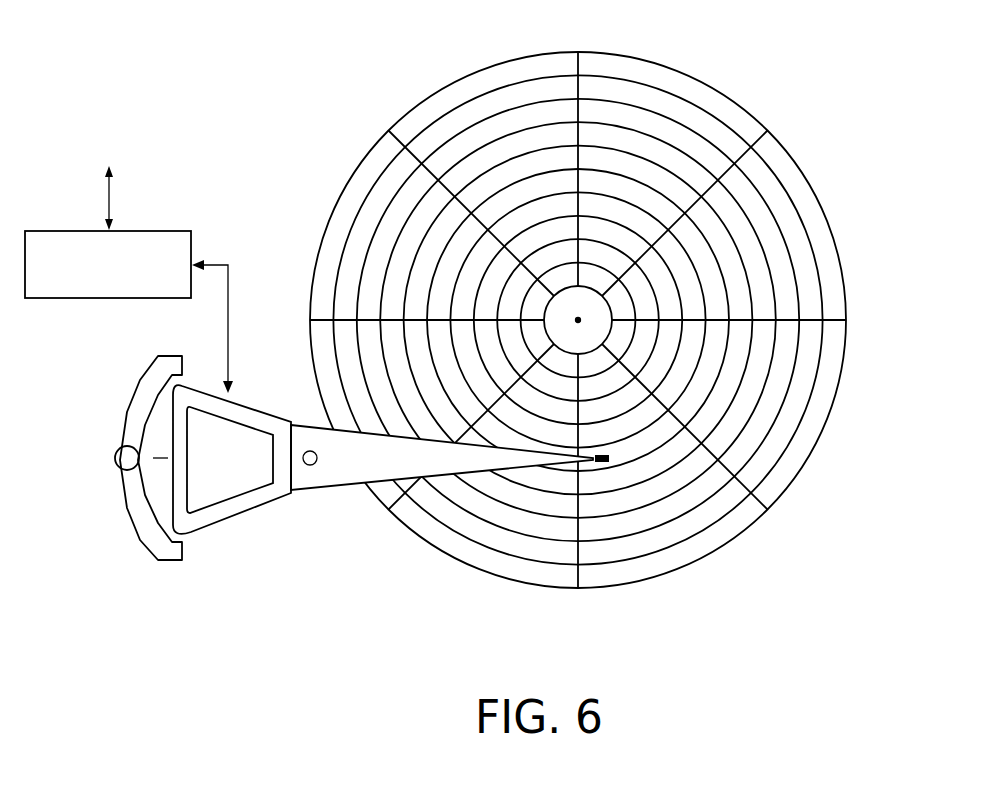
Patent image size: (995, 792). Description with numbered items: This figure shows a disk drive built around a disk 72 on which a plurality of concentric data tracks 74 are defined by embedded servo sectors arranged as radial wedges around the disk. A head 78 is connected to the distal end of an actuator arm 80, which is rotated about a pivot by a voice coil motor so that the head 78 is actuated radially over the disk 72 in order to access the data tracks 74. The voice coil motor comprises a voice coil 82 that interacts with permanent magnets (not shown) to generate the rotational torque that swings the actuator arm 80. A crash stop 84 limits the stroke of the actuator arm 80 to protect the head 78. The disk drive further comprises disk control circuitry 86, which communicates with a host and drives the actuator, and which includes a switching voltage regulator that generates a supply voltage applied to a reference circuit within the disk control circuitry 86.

The disk 72 is at (340, 116).
The data tracks 74 is at (765, 228).
The head 78 is at (618, 450).
The actuator arm 80 is at (300, 493).
The voice coil 82 is at (221, 528).
The crash stop 84 is at (106, 458).
The disk control circuitry 86 is at (103, 300).